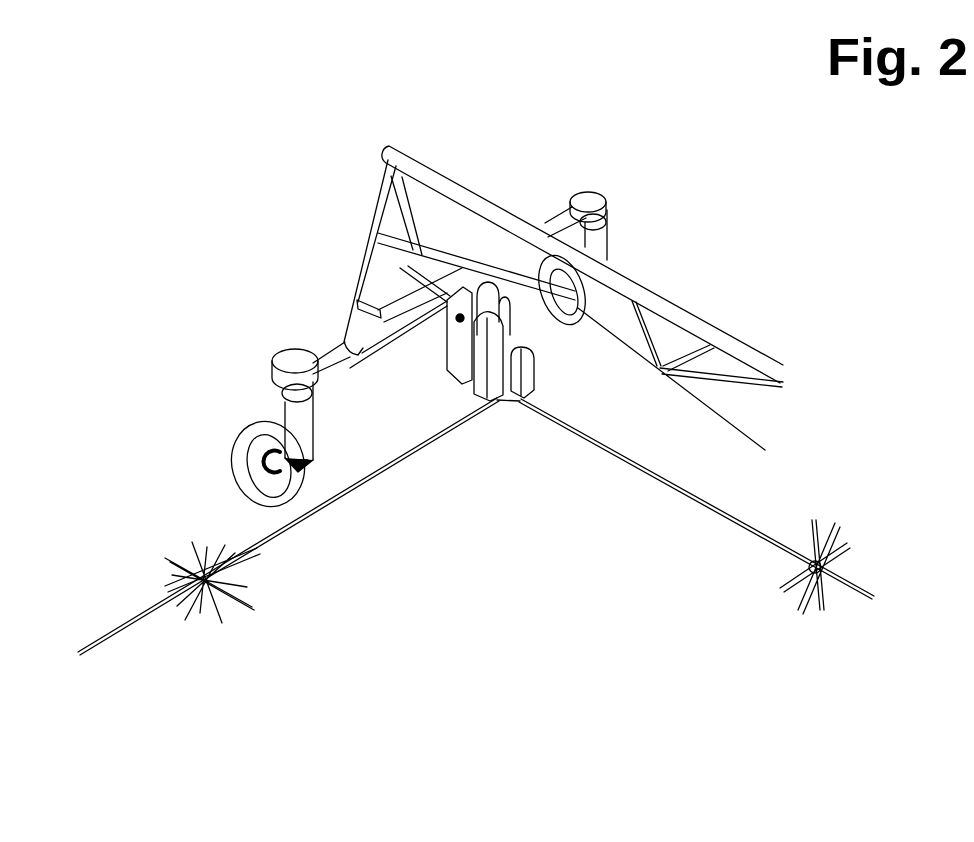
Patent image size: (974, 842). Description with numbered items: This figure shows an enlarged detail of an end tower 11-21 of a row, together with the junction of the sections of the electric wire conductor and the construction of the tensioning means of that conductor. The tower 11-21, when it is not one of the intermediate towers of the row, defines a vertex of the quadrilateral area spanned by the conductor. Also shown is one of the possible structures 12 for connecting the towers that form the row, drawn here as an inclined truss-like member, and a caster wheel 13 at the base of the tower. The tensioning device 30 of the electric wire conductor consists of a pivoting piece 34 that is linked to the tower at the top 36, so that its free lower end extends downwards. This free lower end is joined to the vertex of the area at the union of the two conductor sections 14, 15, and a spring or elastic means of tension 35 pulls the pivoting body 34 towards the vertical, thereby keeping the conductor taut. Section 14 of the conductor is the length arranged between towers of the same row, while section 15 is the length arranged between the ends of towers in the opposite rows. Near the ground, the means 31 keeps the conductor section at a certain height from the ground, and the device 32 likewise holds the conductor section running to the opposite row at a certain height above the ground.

The tower 11-21 is at (320, 275).
The structure 12 is at (708, 313).
The caster wheel 13 is at (228, 465).
The section of electric wire conductor 14 is at (722, 523).
The section of electric wire conductor 15 is at (320, 521).
The tensioning device 30 is at (451, 368).
The means that keeps the wire conductor at a certain height from the ground 31 is at (200, 633).
The device that keeps the conductor at a certain height from the ground 32 is at (858, 512).
The pivoting piece 34 is at (519, 400).
The spring or elastic means of tension 35 is at (472, 396).
The top of the tower 36 is at (462, 295).